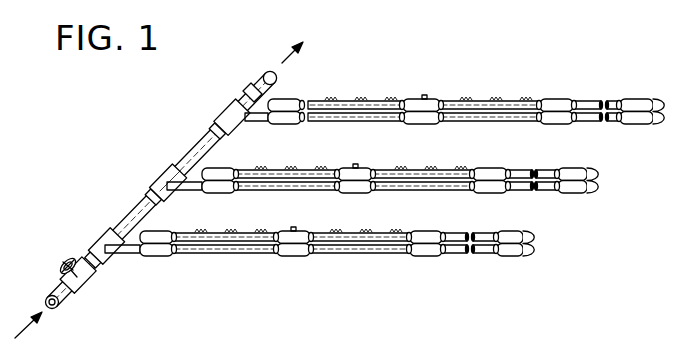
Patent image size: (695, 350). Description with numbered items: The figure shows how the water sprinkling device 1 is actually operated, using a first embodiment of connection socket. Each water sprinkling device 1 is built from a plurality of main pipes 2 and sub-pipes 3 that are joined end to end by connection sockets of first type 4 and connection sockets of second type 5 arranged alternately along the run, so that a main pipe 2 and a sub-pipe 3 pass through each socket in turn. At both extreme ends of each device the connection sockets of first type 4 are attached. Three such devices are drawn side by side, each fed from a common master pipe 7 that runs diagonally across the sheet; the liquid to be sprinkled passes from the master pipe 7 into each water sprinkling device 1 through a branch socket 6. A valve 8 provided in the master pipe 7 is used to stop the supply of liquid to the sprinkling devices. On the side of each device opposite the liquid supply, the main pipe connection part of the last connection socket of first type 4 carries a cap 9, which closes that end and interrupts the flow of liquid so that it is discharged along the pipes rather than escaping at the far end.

The water sprinkling device 1 is at (432, 88).
The main pipe 2 is at (504, 122).
The sub-pipe 3 is at (347, 100).
The connection socket of first type 4 is at (293, 100).
The connection socket of second type 5 is at (427, 124).
The branch socket 6 is at (161, 183).
The master pipe 7 is at (253, 88).
The valve 8 is at (72, 257).
The cap 9 is at (657, 124).